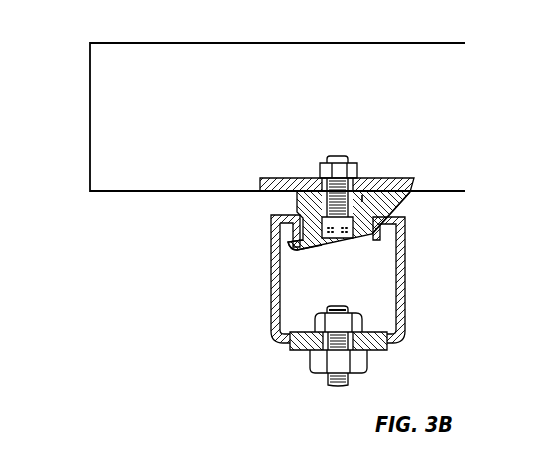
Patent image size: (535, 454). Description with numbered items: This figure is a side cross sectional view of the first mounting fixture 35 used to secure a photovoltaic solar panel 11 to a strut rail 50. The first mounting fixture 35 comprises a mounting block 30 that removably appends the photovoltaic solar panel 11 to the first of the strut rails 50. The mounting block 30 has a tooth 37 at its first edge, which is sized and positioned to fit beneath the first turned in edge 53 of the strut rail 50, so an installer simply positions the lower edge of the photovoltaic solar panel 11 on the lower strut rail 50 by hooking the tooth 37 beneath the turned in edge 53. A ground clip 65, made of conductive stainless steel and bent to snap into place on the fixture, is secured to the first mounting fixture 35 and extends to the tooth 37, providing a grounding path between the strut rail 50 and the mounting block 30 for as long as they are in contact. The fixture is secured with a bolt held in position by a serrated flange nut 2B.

The photovoltaic solar panel 11 is at (97, 117).
The serrated flange nut 2B is at (359, 172).
The mounting block 30 is at (389, 196).
The first mounting fixture 35 is at (412, 201).
The ground clip 65 is at (296, 194).
The first turned in edge 53 is at (294, 237).
The tooth 37 is at (300, 248).
The strut rail 50 is at (404, 288).